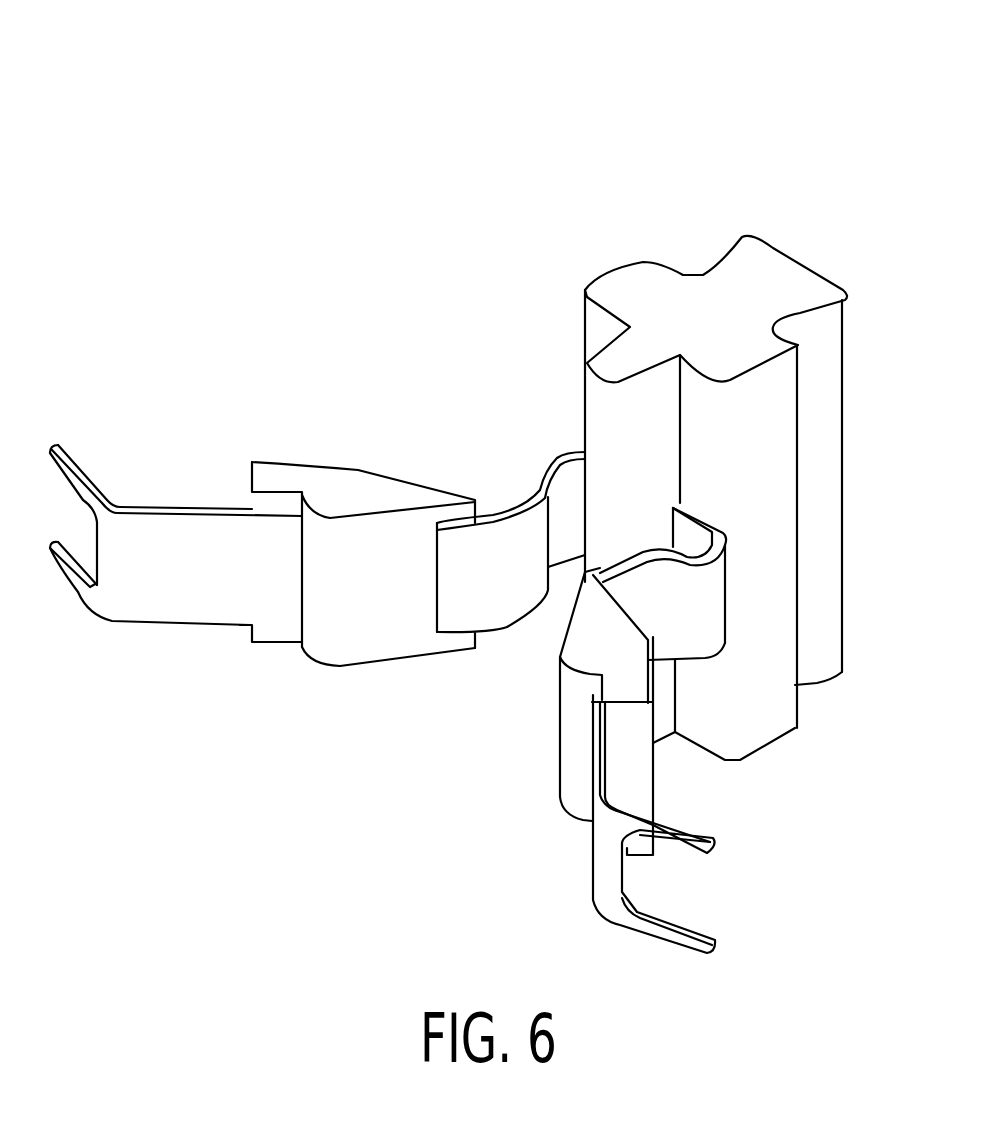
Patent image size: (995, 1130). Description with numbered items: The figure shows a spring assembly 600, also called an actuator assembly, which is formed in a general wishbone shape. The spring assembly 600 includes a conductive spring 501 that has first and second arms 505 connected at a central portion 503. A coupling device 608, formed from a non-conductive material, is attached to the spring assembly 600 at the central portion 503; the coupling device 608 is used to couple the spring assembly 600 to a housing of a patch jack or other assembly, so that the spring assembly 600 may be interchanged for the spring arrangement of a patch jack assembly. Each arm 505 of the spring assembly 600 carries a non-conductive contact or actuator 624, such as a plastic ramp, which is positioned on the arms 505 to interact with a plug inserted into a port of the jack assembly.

The spring assembly 600 is at (662, 88).
The arm 505 is at (264, 340).
The coupling device 608 is at (758, 270).
The conductive spring 501 is at (567, 480).
The central portion 503 is at (693, 510).
The non-conductive contact or actuator 624 is at (368, 485).